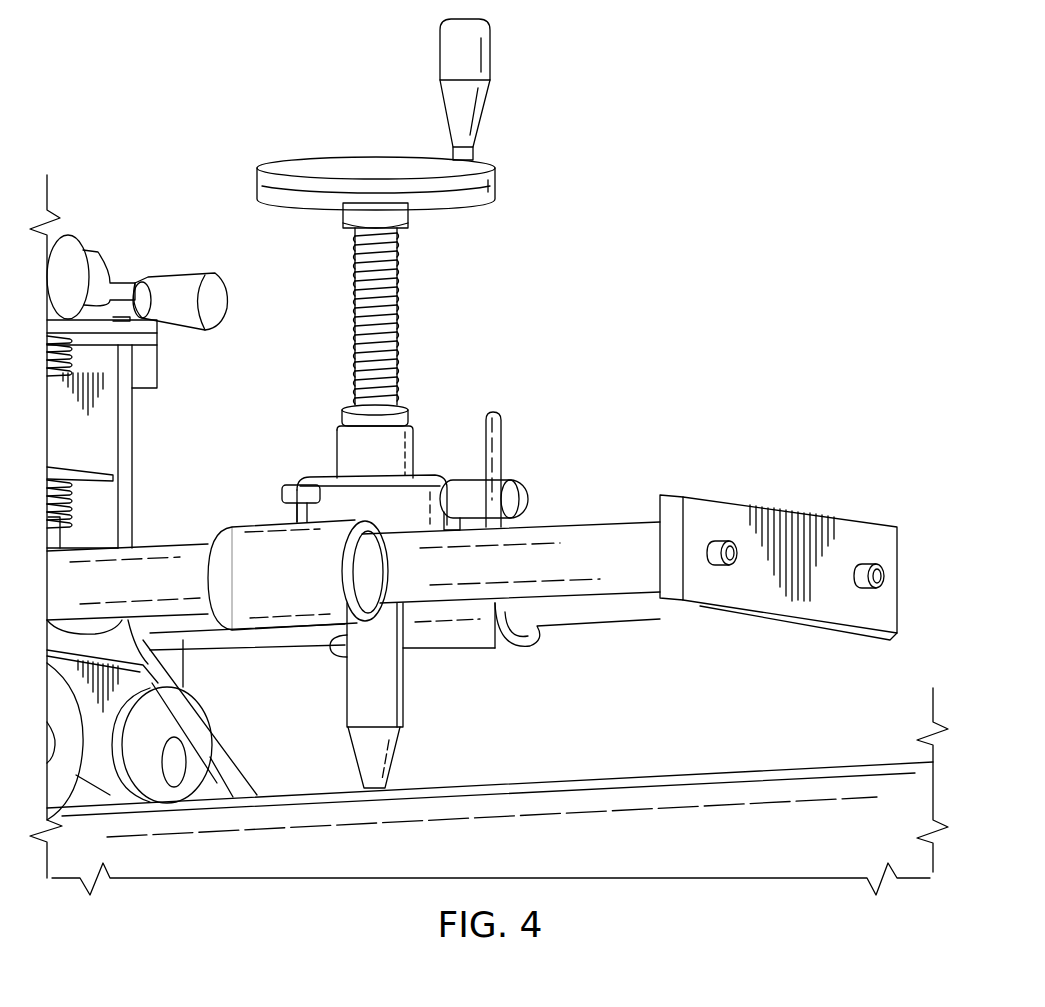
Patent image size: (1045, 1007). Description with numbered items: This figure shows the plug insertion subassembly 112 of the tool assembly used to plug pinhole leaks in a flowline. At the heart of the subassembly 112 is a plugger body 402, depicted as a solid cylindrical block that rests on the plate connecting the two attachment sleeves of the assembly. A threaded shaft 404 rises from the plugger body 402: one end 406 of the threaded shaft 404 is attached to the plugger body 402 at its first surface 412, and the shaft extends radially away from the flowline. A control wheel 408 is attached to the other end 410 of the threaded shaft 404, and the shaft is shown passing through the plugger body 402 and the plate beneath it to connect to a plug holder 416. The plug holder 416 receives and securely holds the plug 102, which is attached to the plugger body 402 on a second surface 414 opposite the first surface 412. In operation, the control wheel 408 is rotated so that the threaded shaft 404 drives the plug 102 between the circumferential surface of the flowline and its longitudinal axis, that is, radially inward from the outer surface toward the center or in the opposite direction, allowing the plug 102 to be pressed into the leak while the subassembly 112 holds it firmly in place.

The plug insertion subassembly 112 is at (606, 97).
The control wheel 408 is at (331, 157).
The other end of the threaded shaft 410 is at (352, 232).
The threaded shaft 404 is at (400, 320).
The end of the threaded shaft 406 is at (355, 404).
The first surface 412 is at (312, 478).
The plugger body 402 is at (422, 485).
The second surface 414 is at (442, 608).
The plug holder 416 is at (347, 702).
The plug 102 is at (400, 748).